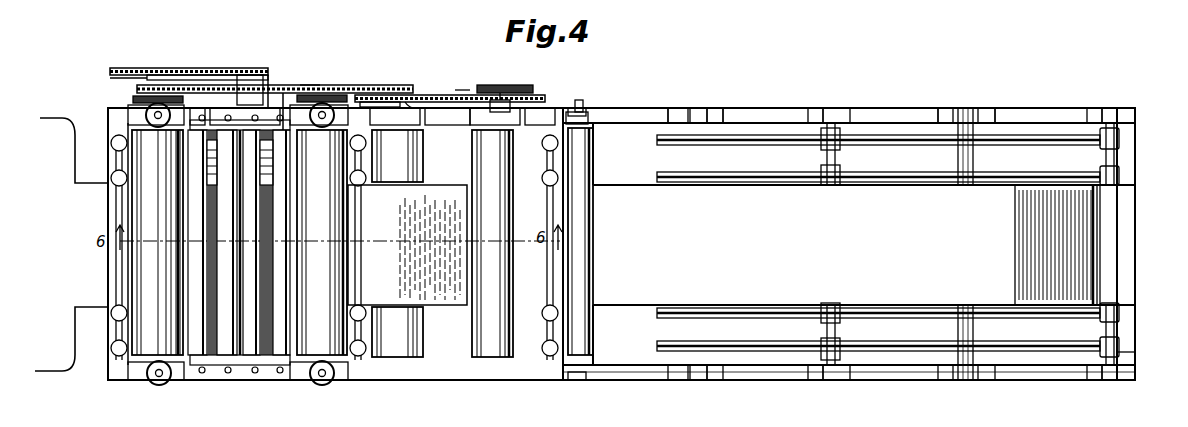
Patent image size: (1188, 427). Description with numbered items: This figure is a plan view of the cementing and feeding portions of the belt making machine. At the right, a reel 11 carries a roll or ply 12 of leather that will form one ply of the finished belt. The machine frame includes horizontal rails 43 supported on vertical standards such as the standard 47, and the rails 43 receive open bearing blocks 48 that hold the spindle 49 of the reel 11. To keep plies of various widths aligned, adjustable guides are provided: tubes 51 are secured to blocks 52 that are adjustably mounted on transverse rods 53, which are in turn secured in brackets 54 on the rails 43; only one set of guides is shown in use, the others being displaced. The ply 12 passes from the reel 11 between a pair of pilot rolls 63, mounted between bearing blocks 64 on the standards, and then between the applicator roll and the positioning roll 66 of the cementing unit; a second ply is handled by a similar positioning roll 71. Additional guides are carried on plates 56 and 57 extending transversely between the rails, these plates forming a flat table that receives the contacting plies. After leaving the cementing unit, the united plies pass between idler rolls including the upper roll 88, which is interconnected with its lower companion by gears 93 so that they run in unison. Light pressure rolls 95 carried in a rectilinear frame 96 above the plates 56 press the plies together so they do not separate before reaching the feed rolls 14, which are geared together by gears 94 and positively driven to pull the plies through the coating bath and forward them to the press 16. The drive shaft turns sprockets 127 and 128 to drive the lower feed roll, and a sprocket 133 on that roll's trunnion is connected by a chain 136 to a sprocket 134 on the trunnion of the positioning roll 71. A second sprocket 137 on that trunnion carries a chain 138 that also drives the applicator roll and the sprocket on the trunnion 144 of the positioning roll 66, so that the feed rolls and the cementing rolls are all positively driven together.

The reel 11 is at (1085, 255).
The ply 12 is at (804, 245).
The feed rolls 14 is at (157, 242).
The press 16 is at (70, 112).
The horizontal rails 43 is at (1052, 380).
The vertical standard 47 is at (1128, 354).
The open bearing blocks 48 is at (712, 112).
The spindle 49 is at (965, 112).
The guide tubes 51 is at (745, 135).
The blocks 52 is at (825, 135).
The transverse rods 53 is at (1114, 328).
The brackets 54 is at (838, 118).
The plate 56 is at (230, 380).
The plate 57 is at (112, 380).
The pilot rolls 63 is at (597, 138).
The bearing blocks 64 is at (572, 110).
The positioning roll 66 is at (513, 262).
The positioning roll 71 is at (420, 343).
The upper idler roll 88 is at (308, 345).
The gears 93 is at (332, 97).
The gears 94 is at (133, 99).
The light pressure rolls 95 is at (283, 108).
The rectilinear frame 96 is at (235, 108).
The sprocket 127 is at (272, 108).
The sprocket 128 is at (155, 68).
The sprocket 133 is at (148, 80).
The sprocket 134 is at (393, 93).
The chain 136 is at (310, 88).
The second sprocket 137 is at (410, 102).
The chain 138 is at (455, 90).
The trunnion 144 is at (495, 85).